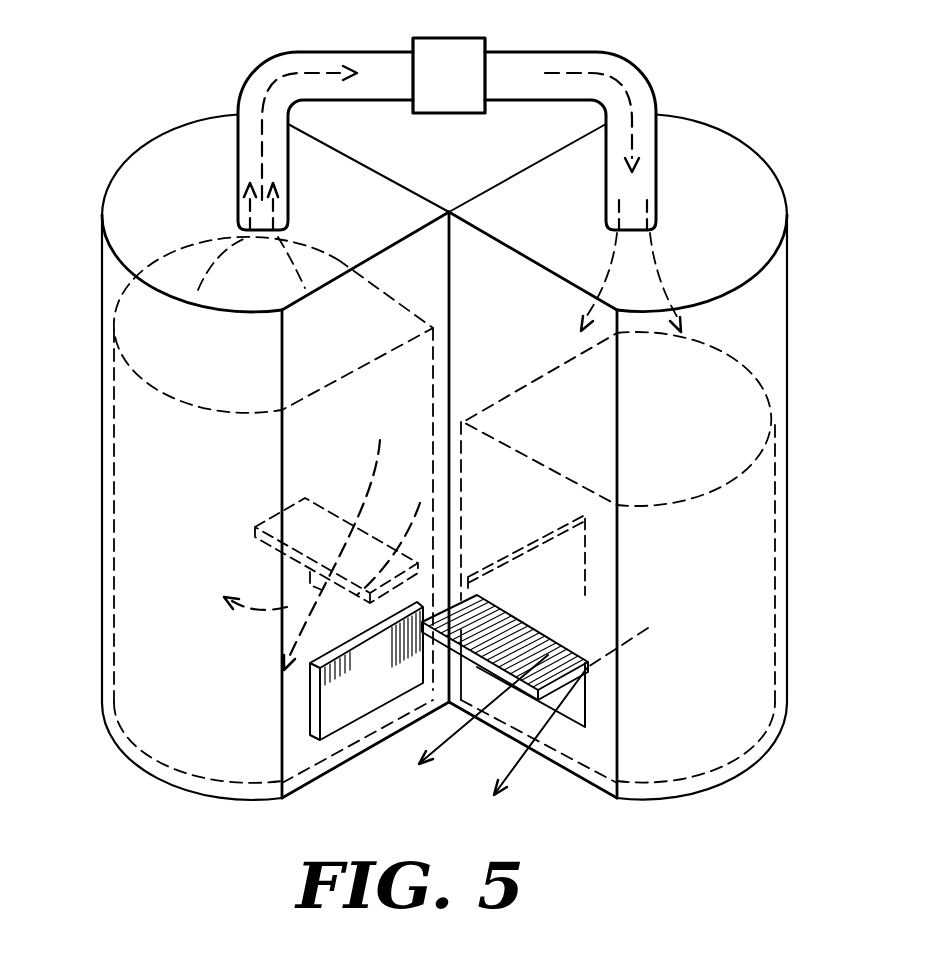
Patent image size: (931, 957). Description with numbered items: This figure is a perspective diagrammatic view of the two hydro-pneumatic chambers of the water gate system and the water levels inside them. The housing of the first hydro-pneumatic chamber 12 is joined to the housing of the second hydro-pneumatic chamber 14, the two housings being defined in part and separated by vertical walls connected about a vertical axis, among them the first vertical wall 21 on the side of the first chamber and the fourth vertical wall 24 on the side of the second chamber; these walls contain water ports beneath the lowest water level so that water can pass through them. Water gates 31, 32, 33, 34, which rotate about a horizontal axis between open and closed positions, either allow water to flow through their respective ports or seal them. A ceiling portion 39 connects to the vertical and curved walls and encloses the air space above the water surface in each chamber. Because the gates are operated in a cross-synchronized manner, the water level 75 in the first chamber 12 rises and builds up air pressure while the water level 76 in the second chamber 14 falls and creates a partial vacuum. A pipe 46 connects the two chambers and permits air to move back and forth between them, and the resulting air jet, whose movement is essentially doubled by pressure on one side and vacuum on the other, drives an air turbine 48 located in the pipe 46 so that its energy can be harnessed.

The first hydro-pneumatic chamber 12 is at (155, 775).
The second hydro-pneumatic chamber 14 is at (723, 780).
The first vertical wall 21 is at (302, 762).
The fourth vertical wall 24 is at (595, 768).
The water gate 31 is at (343, 697).
The water gate 32 is at (272, 520).
The water gate 33 is at (582, 550).
The water gate 34 is at (510, 627).
The ceiling portion 39 is at (142, 173).
The pipe 46 is at (303, 58).
The air turbine 48 is at (443, 50).
The water level 75 is at (135, 377).
The water level 76 is at (765, 390).